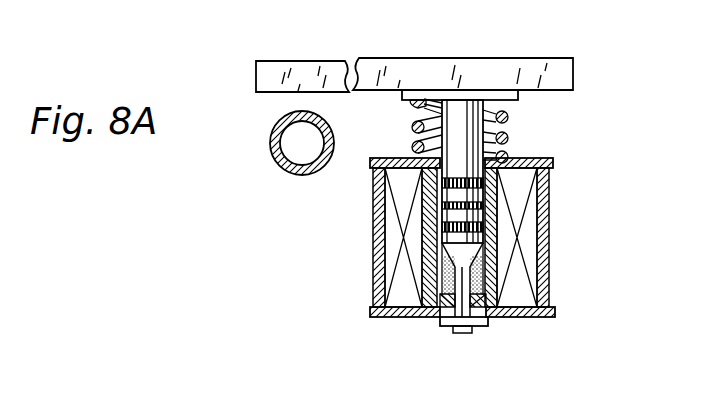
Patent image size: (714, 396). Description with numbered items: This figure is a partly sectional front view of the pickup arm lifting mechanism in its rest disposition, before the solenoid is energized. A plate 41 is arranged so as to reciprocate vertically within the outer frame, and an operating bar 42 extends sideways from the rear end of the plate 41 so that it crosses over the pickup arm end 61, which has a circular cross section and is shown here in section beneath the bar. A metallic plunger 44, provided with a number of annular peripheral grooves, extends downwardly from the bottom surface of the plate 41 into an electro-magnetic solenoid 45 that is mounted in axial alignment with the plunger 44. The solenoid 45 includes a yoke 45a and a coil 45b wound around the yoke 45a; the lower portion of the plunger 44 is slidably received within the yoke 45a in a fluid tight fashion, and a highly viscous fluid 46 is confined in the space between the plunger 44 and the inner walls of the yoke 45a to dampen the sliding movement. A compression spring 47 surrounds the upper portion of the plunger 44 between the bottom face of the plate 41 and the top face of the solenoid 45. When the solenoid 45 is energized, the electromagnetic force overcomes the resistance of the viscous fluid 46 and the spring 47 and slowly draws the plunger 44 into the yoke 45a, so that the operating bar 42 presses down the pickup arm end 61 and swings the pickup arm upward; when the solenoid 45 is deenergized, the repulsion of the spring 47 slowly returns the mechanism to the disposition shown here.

The plate 41 is at (525, 67).
The operating bar 42 is at (313, 71).
The plunger 44 is at (507, 120).
The electro-magnetic solenoid 45 is at (503, 261).
The yoke 45a is at (548, 310).
The coil 45b is at (527, 227).
The viscous fluid 46 is at (480, 325).
The compression spring 47 is at (508, 138).
The pickup arm end 61 is at (277, 165).